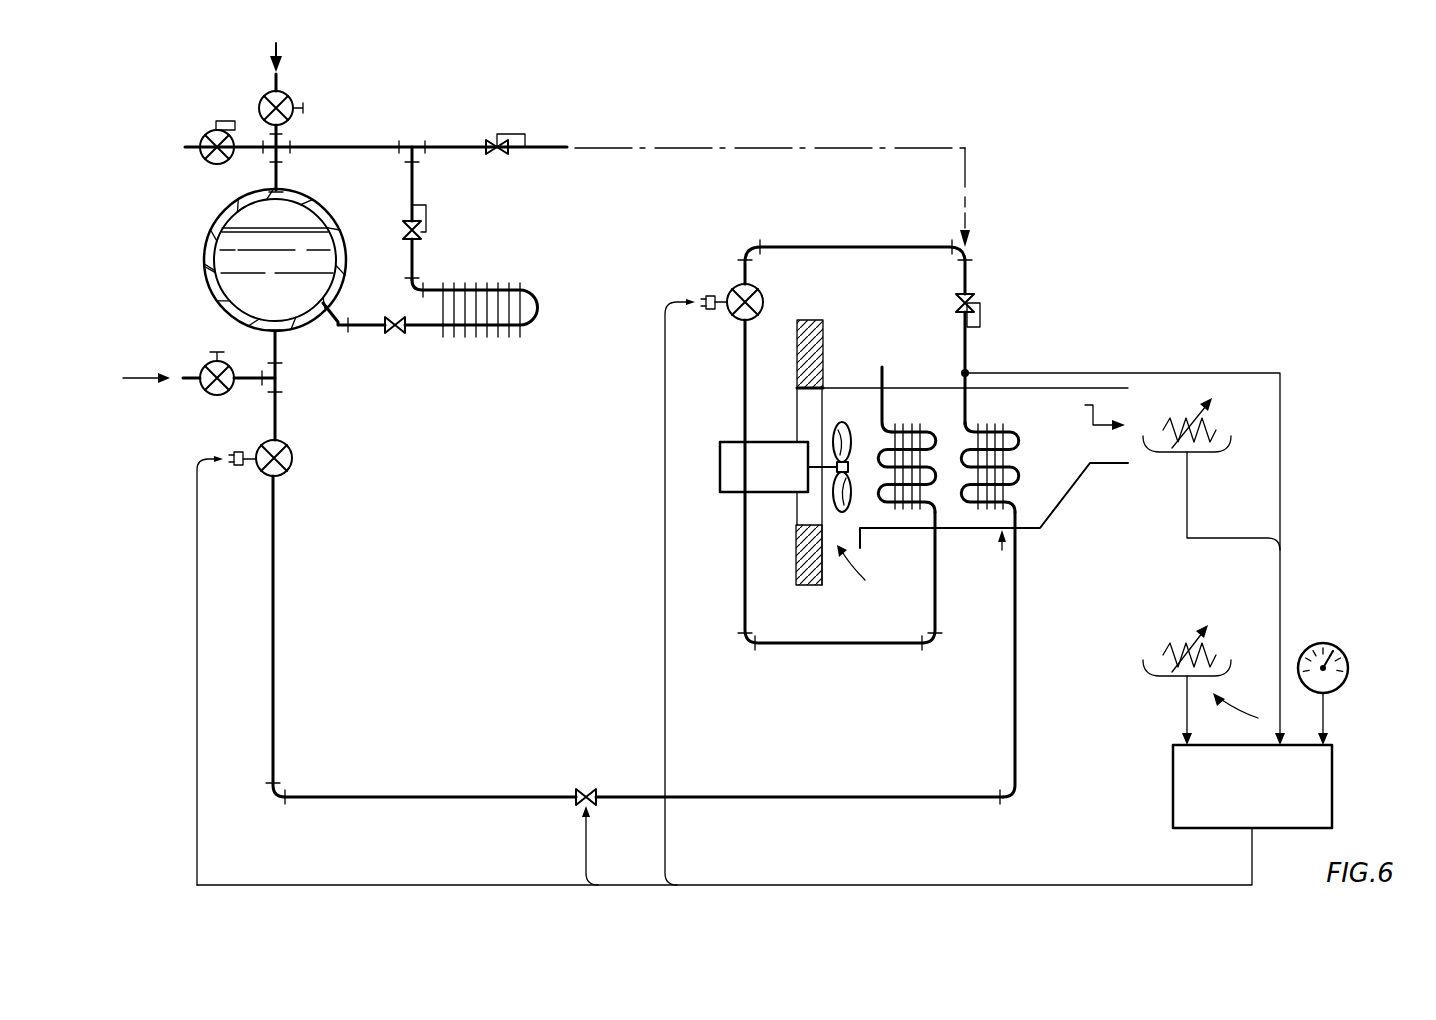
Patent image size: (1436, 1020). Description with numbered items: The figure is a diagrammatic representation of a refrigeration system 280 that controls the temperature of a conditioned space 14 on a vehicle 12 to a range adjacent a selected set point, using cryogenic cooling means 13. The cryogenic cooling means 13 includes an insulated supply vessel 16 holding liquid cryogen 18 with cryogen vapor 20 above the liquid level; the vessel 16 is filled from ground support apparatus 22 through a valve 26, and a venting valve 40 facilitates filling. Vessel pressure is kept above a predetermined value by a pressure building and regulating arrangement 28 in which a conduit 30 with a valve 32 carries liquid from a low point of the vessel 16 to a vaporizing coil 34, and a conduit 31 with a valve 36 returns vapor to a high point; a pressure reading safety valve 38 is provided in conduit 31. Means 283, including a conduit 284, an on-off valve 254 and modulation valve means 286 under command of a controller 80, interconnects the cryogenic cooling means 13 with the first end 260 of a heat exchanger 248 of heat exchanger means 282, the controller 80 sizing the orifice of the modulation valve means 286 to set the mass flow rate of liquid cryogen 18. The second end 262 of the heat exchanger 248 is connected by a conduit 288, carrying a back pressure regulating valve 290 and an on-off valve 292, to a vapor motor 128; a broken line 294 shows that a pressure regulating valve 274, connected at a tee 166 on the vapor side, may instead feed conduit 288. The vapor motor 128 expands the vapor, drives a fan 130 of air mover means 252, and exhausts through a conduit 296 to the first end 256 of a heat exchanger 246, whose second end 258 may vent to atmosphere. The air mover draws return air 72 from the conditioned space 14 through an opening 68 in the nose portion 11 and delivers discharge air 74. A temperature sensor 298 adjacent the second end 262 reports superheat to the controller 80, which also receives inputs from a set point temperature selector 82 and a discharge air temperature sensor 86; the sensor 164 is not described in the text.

The nose portion 11 is at (802, 588).
The vehicle 12 is at (759, 605).
The cryogenic cooling means 13 is at (364, 188).
The conditioned space 14 is at (1089, 515).
The supply vessel 16 is at (205, 282).
The liquid cryogen 18 is at (297, 225).
The cryogen vapor 20 is at (255, 215).
The ground support apparatus 22 is at (138, 375).
The valve 26 is at (203, 367).
The pressure building and regulating arrangement 28 is at (472, 263).
The conduit 30 is at (334, 316).
The conduit 31 is at (311, 146).
The valve 32 is at (386, 334).
The vaporizing coil 34 is at (505, 338).
The valve 36 is at (404, 237).
The pressure reading safety valve 38 is at (209, 132).
The venting valve 40 is at (289, 98).
The opening 68 is at (797, 548).
The return air 72 is at (1258, 718).
The discharge air 74 is at (1092, 411).
The controller 80 is at (1173, 765).
The set point temperature selector 82 is at (1348, 668).
The discharge air temperature sensor 86 is at (1214, 428).
The vapor motor 128 is at (770, 442).
The fan 130 is at (840, 420).
The temperature sensor 164 is at (1165, 650).
The tee 166 is at (412, 145).
The first heat exchanger 246 is at (938, 440).
The second heat exchanger 248 is at (963, 500).
The air mover means 252 is at (753, 528).
The on-off valve 254 is at (291, 450).
The first end 256 is at (932, 535).
The second end 258 is at (880, 372).
The first end 260 is at (1020, 530).
The second end 262 is at (962, 388).
The pressure regulating valve 274 is at (488, 133).
The refrigeration system 280 is at (701, 88).
The heat exchanger means 282 is at (1002, 560).
The means 283 is at (355, 808).
The conduit 284 is at (273, 698).
The modulation valve means 286 is at (580, 788).
The conduit 288 is at (832, 243).
The back pressure regulating valve 290 is at (957, 297).
The on-off valve 292 is at (760, 290).
The broken line 294 is at (608, 148).
The conduit 296 is at (840, 648).
The temperature sensor 298 is at (975, 370).